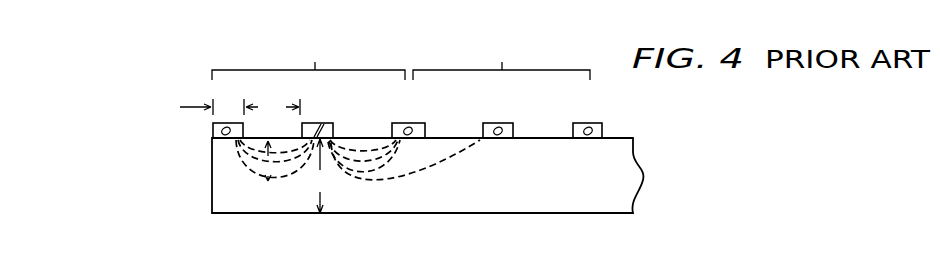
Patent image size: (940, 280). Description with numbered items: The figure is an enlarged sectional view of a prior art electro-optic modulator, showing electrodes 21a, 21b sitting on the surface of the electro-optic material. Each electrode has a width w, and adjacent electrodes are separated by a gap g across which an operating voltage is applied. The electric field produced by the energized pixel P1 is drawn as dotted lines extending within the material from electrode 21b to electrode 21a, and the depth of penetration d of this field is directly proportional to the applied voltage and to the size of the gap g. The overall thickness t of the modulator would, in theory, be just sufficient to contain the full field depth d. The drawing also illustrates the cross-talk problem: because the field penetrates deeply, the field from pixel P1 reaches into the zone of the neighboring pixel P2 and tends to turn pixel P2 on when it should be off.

The electrode 21a is at (212, 126).
The electrode 21b is at (336, 126).
The pixel P1 is at (501, 62).
The pixel P2 is at (308, 62).
The electrode width w is at (219, 107).
The electrode gap g is at (283, 107).
The depth of penetration d is at (266, 161).
The modulator thickness t is at (319, 176).